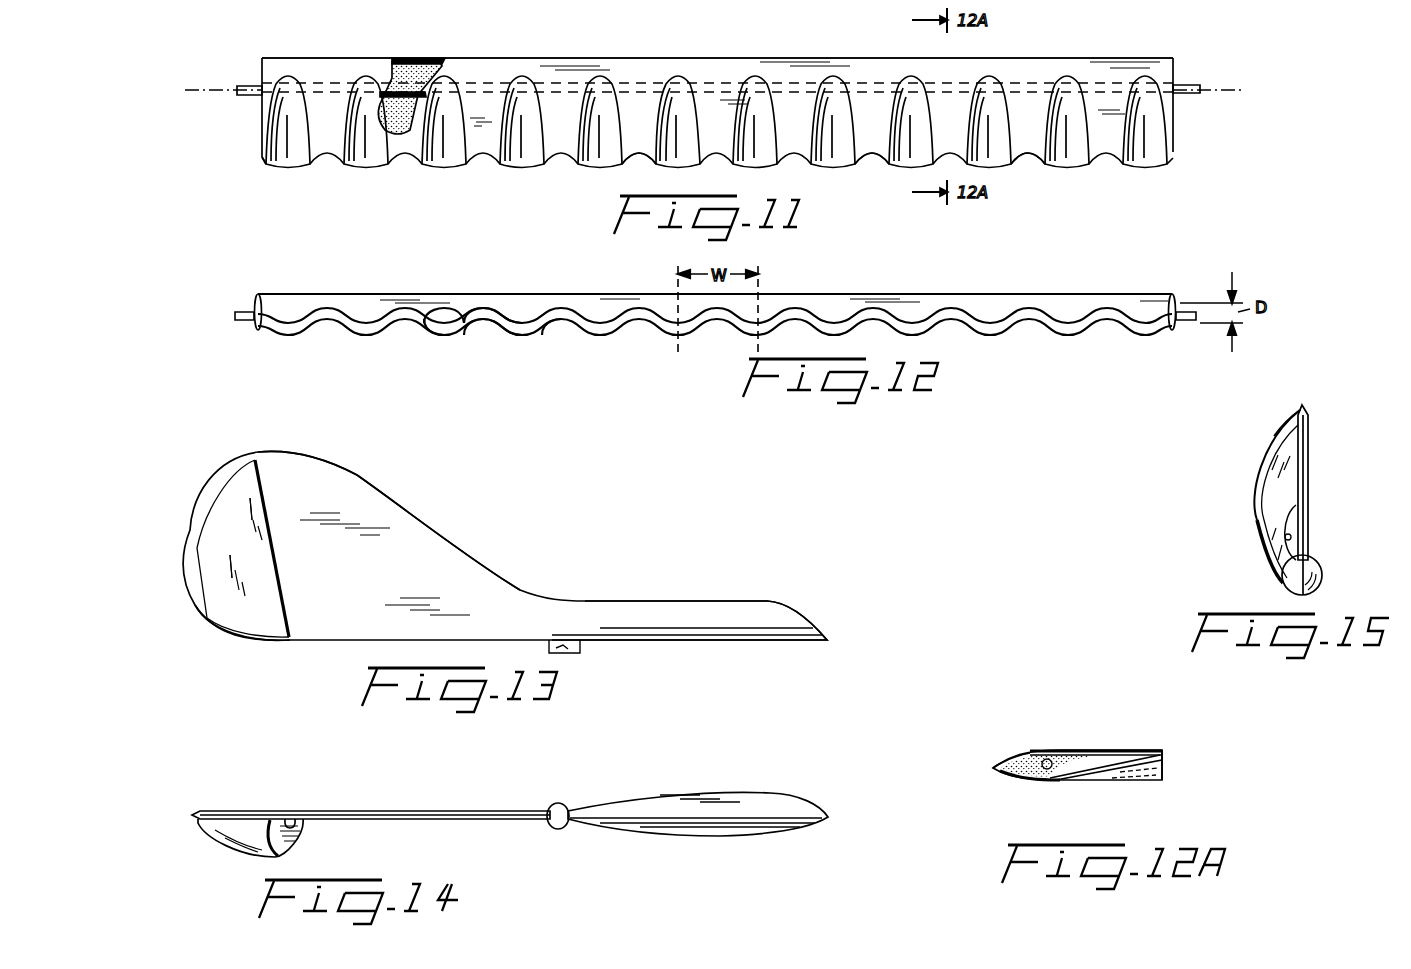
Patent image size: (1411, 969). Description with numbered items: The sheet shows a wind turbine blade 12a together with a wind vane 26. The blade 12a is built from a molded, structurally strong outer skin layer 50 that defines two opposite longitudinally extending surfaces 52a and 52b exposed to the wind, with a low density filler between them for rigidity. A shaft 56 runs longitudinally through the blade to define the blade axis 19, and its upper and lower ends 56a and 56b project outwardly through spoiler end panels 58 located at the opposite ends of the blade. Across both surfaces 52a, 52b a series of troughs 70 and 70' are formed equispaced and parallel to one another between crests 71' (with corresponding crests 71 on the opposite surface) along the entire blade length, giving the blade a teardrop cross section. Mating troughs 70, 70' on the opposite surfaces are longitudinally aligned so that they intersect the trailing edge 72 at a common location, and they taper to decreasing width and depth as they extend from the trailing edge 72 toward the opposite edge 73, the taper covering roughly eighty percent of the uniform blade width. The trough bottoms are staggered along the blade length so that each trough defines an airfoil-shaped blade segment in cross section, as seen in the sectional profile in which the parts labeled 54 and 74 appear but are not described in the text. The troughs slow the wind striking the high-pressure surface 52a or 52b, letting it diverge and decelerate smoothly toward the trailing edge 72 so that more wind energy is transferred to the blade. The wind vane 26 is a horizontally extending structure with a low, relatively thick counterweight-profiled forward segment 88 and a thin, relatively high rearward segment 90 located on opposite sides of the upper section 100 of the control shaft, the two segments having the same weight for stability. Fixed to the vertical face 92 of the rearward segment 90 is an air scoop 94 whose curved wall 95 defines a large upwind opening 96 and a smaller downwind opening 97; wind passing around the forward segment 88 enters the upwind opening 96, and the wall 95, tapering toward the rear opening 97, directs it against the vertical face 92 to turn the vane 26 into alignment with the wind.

In FIG. 11, the blade axis 19 is at (191, 85).
In FIG. 11, the spoiler end panels 58 is at (265, 62).
In FIG. 12, the spoiler end panels 58 is at (254, 297).
In FIG. 11, the longitudinally extending surface 52a is at (318, 68).
In FIG. 12, the longitudinally extending surface 52a is at (990, 297).
In FIG. 12A, the longitudinally extending surface 52a is at (1040, 752).
In FIG. 11, the outer skin layer 50 is at (412, 58).
In FIG. 11, the slot 54 is at (438, 58).
In FIG. 11, the shaft 56 is at (650, 80).
In FIG. 11, the upper shaft end 56a is at (1185, 85).
In FIG. 11, the lower shaft end 56b is at (240, 97).
In FIG. 11, the blade edge 73 is at (760, 57).
In FIG. 12A, the blade edge 73 is at (993, 768).
In FIG. 11, the blade 12a is at (265, 172).
In FIG. 11, the troughs 70 is at (716, 147).
In FIG. 12, the troughs 70 is at (444, 279).
In FIG. 11, the scallop 71 is at (818, 185).
In FIG. 12, the scallop 71 is at (493, 292).
In FIG. 12A, the scallop 71 is at (1096, 724).
In FIG. 11, the trailing edge 72 is at (832, 160).
In FIG. 12A, the trailing edge 72 is at (1163, 777).
In FIG. 12, the longitudinally extending surface 52b is at (338, 326).
In FIG. 12A, the longitudinally extending surface 52b is at (1038, 780).
In FIG. 12, the crests 71' is at (482, 349).
In FIG. 12, the troughs 70' is at (492, 360).
In FIG. 12A, the troughs 70' is at (1138, 795).
In FIG. 12A, the web 74 is at (1085, 781).
In FIG. 13, the rearward segment 90 is at (360, 470).
In FIG. 14, the rearward segment 90 is at (383, 804).
In FIG. 13, the vertical face 92 is at (300, 472).
In FIG. 14, the vertical face 92 is at (290, 817).
In FIG. 15, the vertical face 92 is at (1296, 440).
In FIG. 13, the wind vane 26 is at (516, 533).
In FIG. 13, the upwind opening 96 is at (283, 560).
In FIG. 15, the upwind opening 96 is at (1270, 465).
In FIG. 13, the curved wall 95 is at (268, 603).
In FIG. 14, the curved wall 95 is at (243, 846).
In FIG. 15, the curved wall 95 is at (1268, 518).
In FIG. 13, the forward segment 88 is at (700, 597).
In FIG. 14, the forward segment 88 is at (706, 788).
In FIG. 15, the forward segment 88 is at (1318, 568).
In FIG. 13, the air scoop 94 is at (237, 640).
In FIG. 14, the upper section of control shaft 100 is at (558, 803).
In FIG. 14, the downwind opening 97 is at (300, 835).
In FIG. 15, the downwind opening 97 is at (1286, 545).